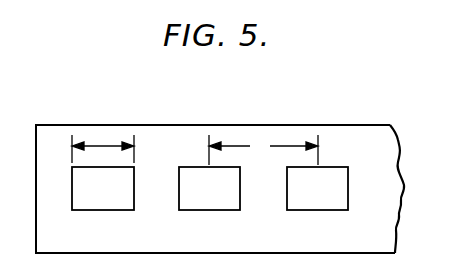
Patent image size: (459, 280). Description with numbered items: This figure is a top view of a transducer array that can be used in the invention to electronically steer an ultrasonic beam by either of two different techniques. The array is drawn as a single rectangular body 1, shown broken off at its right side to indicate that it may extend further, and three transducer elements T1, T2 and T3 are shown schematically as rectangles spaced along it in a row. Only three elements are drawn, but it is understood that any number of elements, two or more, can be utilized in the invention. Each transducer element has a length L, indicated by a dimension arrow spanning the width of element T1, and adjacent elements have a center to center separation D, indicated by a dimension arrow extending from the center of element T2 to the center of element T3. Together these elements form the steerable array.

The substrate 1 is at (374, 131).
The transducer element T1 is at (103, 188).
The transducer element T2 is at (209, 188).
The transducer element T3 is at (317, 188).
The length L is at (103, 146).
The center to center separation D is at (263, 150).